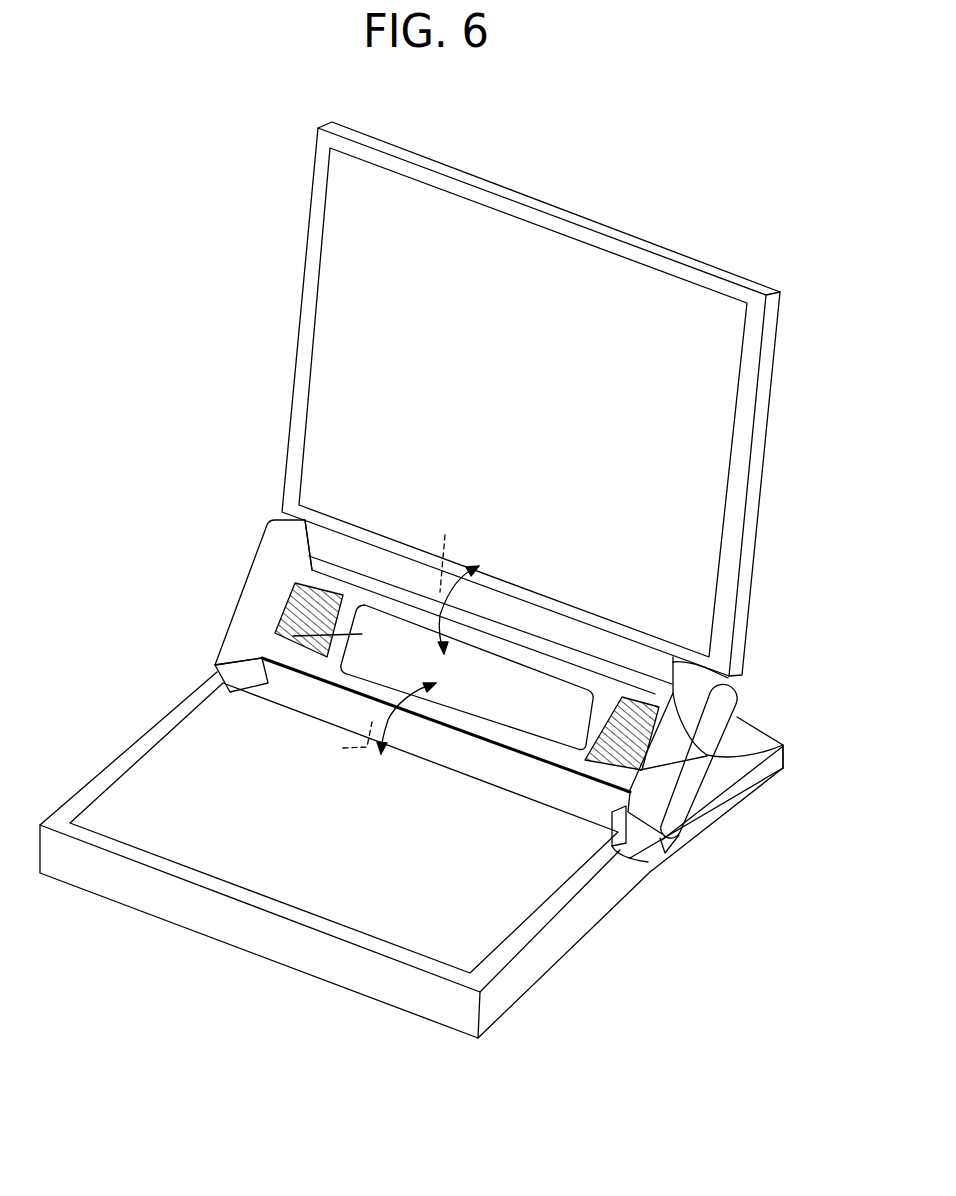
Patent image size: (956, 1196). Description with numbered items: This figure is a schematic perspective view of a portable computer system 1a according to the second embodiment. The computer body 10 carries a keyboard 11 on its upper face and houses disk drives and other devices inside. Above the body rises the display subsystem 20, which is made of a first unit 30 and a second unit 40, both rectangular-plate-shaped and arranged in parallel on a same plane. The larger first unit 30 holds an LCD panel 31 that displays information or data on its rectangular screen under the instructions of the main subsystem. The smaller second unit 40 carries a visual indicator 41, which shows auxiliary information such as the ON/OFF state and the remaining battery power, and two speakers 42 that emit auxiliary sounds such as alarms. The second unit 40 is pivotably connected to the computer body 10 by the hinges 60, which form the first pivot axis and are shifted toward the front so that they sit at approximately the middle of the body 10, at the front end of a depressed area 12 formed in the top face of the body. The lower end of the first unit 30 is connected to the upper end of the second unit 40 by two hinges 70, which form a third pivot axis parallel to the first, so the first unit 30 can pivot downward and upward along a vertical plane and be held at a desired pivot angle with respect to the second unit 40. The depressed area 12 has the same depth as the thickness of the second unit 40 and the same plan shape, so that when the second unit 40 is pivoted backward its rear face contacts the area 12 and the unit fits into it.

The portable computer system 1a is at (190, 973).
The computer body 10 is at (525, 987).
The keyboard 11 is at (528, 891).
The depressed area 12 is at (752, 730).
The display subsystem 20 is at (253, 138).
The first unit 30 is at (306, 250).
The LCD panel 31 is at (291, 415).
The second unit 40 is at (256, 572).
The visual indicator 41 is at (293, 636).
The speakers 42 is at (282, 622).
The hinges 60 is at (253, 688).
The hinges 70 is at (302, 534).